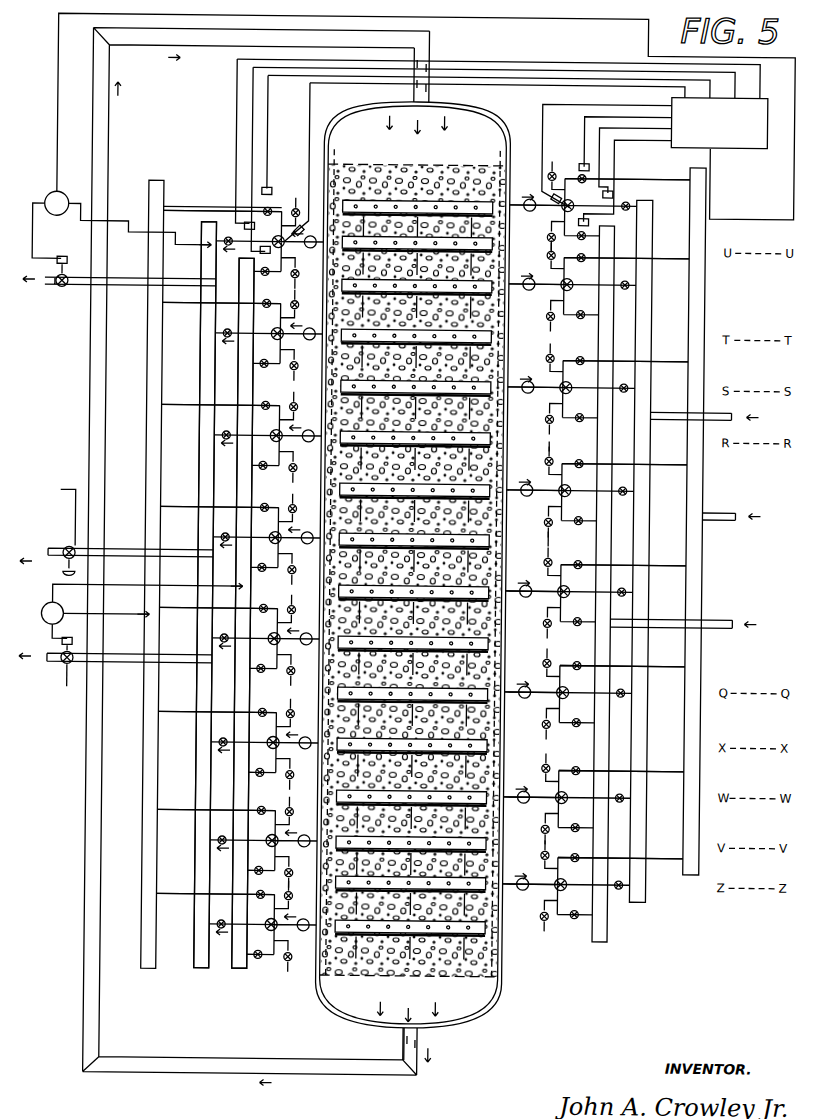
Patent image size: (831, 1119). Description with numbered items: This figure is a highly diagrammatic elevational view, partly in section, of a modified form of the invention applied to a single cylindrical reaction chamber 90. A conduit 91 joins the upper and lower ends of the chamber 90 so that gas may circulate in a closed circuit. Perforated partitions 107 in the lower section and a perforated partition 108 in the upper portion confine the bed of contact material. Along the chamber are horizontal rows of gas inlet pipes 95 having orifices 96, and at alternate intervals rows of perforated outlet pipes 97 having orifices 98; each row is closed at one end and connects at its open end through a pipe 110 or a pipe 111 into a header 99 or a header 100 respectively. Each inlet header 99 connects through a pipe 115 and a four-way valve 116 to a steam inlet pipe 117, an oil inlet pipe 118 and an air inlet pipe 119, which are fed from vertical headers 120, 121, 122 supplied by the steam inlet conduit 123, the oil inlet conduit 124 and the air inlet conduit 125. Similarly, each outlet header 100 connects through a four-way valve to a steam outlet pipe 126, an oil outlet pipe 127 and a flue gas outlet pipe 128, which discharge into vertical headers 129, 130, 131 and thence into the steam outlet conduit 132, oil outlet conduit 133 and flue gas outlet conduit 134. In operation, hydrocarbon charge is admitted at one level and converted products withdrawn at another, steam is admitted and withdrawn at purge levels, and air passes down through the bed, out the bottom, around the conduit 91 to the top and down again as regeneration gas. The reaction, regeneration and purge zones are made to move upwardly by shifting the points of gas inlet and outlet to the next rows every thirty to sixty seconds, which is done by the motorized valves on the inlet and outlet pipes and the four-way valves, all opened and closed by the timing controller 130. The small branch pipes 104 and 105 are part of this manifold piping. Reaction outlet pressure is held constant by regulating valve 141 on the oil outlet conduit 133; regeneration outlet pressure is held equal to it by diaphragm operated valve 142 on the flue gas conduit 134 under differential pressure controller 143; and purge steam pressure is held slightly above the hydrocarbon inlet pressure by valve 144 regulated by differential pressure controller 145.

The cylindrical reaction chamber 90 is at (478, 124).
The conduit 91 is at (236, 48).
The gas inlet pipes 95 is at (335, 200).
The orifices 96 is at (506, 165).
The perforated outlet pipes 97 is at (322, 270).
The orifices 98 is at (506, 244).
The header 99 is at (526, 204).
The header 100 is at (315, 320).
The branch conduit 104 is at (548, 450).
The branch conduit 105 is at (548, 545).
The perforated partitions 107 is at (498, 996).
The perforated partition 108 is at (470, 160).
The pipe 110 is at (518, 206).
The pipe 111 is at (316, 330).
The pipe 115 is at (545, 385).
The four-way valve 116 is at (590, 210).
The steam inlet pipe 117 is at (568, 290).
The oil inlet pipe 118 is at (684, 200).
The air inlet pipe 119 is at (560, 244).
The vertical header 120 is at (650, 315).
The vertical header 121 is at (703, 573).
The vertical header 122 is at (615, 612).
The steam inlet conduit 123 is at (672, 405).
The oil inlet conduit 124 is at (712, 508).
The air inlet conduit 125 is at (712, 615).
The steam outlet pipe 126 is at (232, 206).
The oil outlet pipe 127 is at (180, 205).
The flue gas outlet pipe 128 is at (287, 275).
The vertical header 129 is at (230, 300).
The timing controller 130 is at (153, 183).
The vertical header 131 is at (243, 672).
The steam outlet conduit 132 is at (143, 263).
The oil outlet conduit 133 is at (62, 548).
The flue gas outlet conduit 134 is at (62, 690).
The regulating valve 141 is at (60, 492).
The diaphragm operated valve 142 is at (75, 680).
The differential pressure controller 143 is at (53, 596).
The valve 144 is at (68, 276).
The differential pressure controller 145 is at (62, 196).